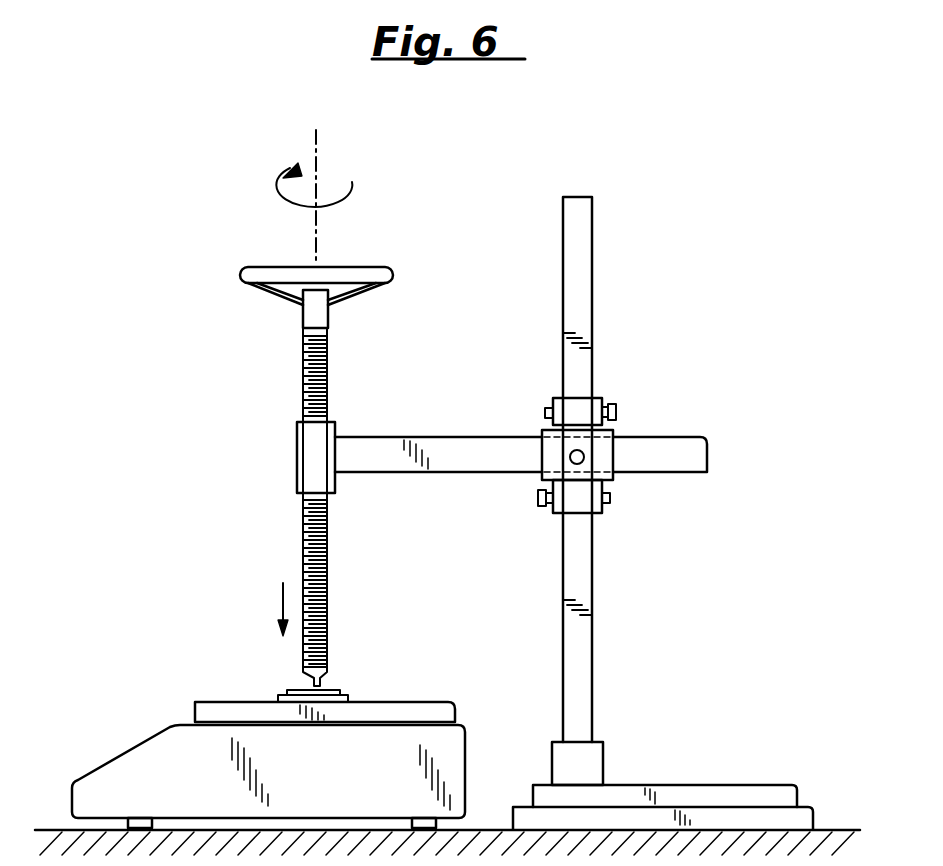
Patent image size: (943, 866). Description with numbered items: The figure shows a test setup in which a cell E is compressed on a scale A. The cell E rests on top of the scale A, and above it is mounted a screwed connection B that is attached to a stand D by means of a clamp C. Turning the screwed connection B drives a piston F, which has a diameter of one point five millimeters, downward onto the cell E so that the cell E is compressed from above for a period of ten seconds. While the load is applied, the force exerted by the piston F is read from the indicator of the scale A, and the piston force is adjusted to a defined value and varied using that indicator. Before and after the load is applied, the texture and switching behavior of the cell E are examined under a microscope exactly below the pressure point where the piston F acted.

The scale A is at (112, 778).
The screwed connection B is at (328, 386).
The clamp C is at (604, 460).
The stand D is at (689, 795).
The cell E is at (336, 690).
The piston F is at (314, 686).